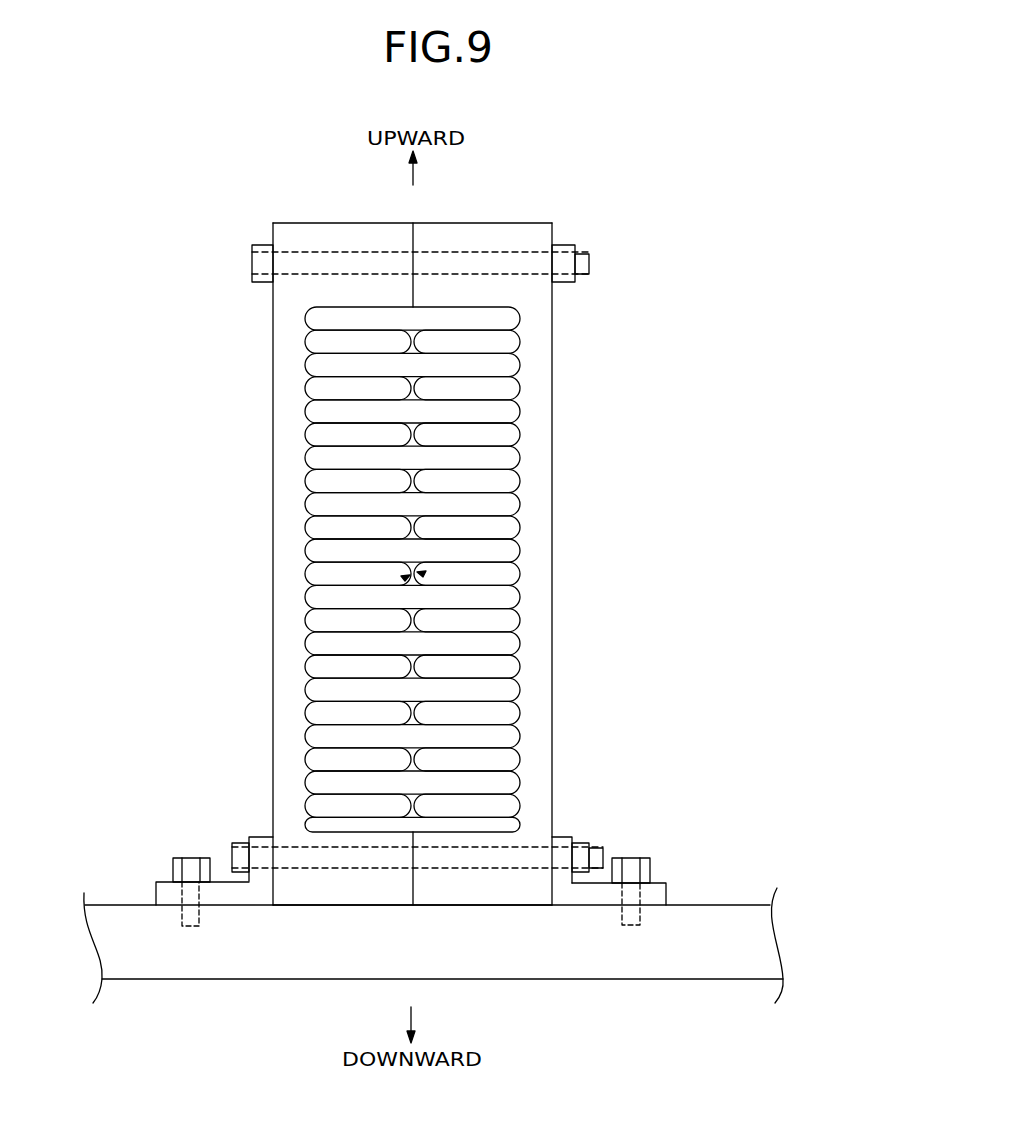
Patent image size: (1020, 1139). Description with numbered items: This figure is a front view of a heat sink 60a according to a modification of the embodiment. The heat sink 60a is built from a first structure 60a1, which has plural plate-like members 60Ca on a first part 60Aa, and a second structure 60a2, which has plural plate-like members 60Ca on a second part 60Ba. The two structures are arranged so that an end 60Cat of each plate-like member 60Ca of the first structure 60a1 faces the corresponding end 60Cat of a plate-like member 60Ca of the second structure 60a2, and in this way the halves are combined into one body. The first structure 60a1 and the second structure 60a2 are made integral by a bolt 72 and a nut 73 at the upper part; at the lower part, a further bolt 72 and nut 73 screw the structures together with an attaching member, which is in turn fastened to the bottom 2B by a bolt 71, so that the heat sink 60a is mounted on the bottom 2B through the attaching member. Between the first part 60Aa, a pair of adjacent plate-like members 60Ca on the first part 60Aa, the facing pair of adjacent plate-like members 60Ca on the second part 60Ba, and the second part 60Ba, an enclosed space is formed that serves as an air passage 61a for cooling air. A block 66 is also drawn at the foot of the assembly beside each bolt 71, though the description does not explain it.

The heat sink 60a is at (182, 152).
The first part 60Aa is at (287, 413).
The second part 60Ba is at (533, 413).
The first structure 60a1 is at (154, 393).
The second structure 60a2 is at (668, 395).
The plate-like member 60Ca is at (333, 433).
The end of the plate-like member 60Cat is at (408, 578).
The air passage 61a is at (418, 552).
The bolt 72 is at (252, 252).
The nut 73 is at (565, 250).
The bolt 71 is at (190, 865).
The support block 66 is at (163, 893).
The bottom 2B is at (743, 915).